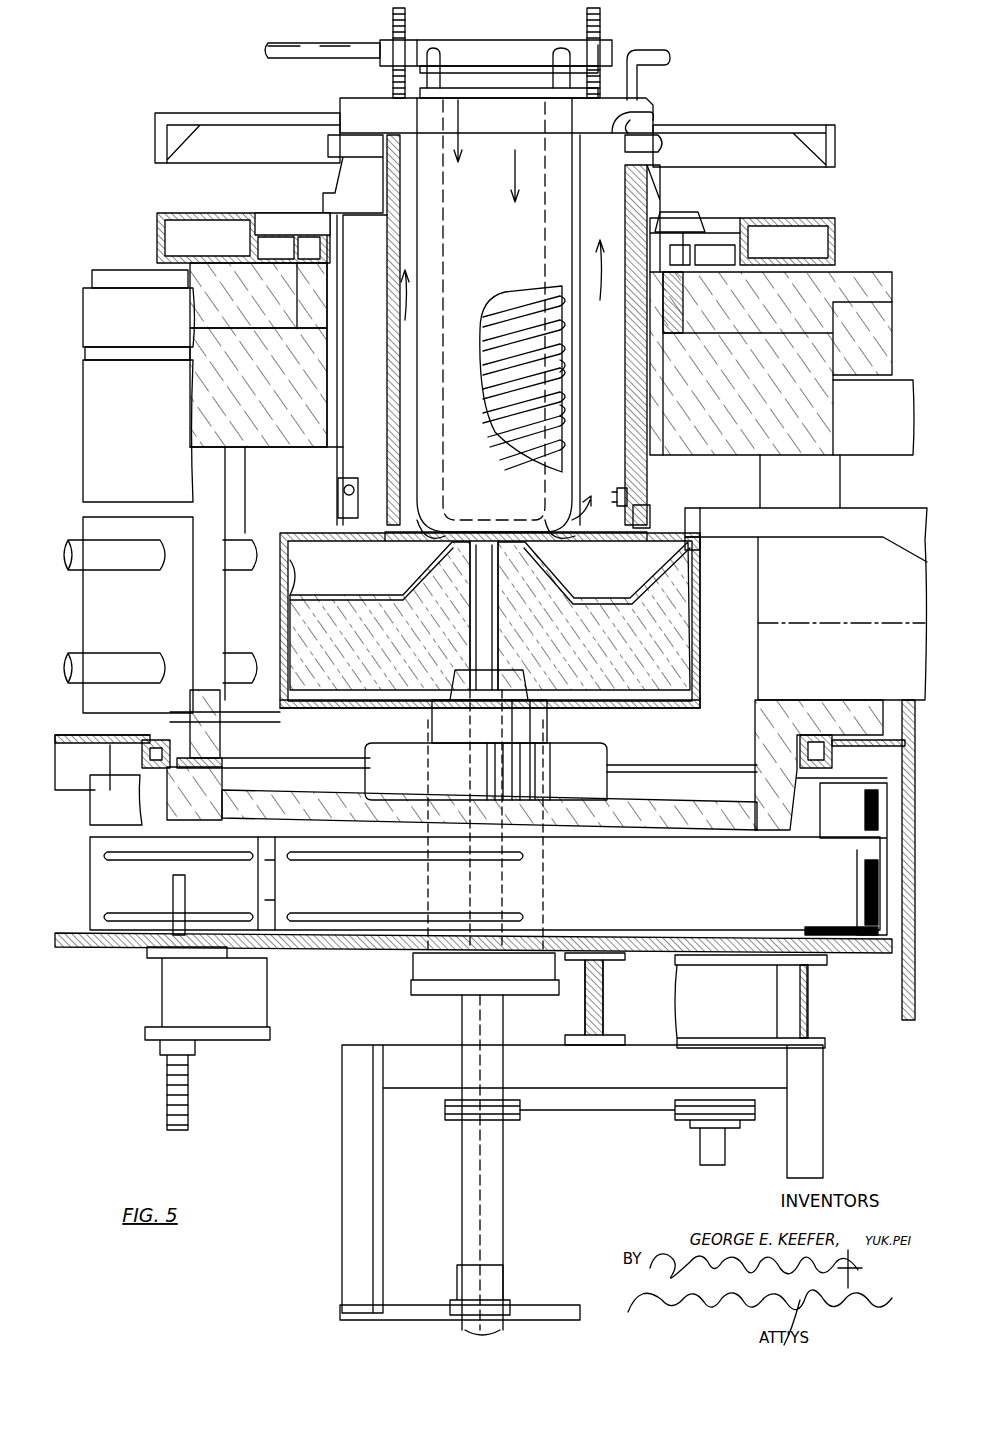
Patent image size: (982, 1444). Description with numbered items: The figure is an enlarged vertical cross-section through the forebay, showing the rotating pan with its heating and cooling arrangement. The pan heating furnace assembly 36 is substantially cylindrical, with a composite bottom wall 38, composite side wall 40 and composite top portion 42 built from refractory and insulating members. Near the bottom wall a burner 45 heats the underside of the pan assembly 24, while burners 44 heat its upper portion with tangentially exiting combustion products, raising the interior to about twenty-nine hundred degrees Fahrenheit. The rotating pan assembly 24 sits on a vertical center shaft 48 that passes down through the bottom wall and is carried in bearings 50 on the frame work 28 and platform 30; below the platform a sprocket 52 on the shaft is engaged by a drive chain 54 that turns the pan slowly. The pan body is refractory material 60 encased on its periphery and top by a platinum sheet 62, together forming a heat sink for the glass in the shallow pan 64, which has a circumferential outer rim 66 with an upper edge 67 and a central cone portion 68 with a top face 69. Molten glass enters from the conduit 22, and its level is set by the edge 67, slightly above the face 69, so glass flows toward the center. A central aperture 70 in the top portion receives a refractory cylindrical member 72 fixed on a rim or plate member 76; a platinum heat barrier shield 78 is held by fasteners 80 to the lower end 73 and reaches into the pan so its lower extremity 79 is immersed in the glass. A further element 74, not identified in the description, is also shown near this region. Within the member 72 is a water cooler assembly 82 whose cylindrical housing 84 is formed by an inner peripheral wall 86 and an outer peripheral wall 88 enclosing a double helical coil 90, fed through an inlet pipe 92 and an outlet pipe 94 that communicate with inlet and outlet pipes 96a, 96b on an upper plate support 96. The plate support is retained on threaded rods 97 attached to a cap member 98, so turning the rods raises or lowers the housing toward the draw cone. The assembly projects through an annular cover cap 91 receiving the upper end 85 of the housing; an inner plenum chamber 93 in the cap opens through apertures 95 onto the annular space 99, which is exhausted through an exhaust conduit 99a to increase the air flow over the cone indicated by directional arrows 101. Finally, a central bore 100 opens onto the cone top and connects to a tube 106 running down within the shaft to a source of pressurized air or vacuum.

The conduit 22 is at (858, 508).
The rotating pan assembly 24 is at (712, 648).
The frame work 28 is at (823, 1132).
The platform 30 is at (803, 1006).
The pan heating furnace assembly 36 is at (105, 255).
The composite bottom wall 38 is at (485, 883).
The composite side wall 40 is at (138, 536).
The composite top portion 42 is at (866, 272).
The burners 44 is at (128, 562).
The burner 45 is at (240, 683).
The vertical center shaft 48 is at (503, 1020).
The bearings 50 is at (443, 995).
The sprocket 52 is at (520, 1115).
The drive chain 54 is at (598, 1110).
The refractory material 60 is at (626, 690).
The platinum sheet 62 is at (700, 586).
The pan 64 is at (345, 590).
The circumferential outer rim 66 is at (700, 557).
The upper edge 67 is at (698, 510).
The central cone portion 68 is at (415, 548).
The top face 69 is at (505, 532).
The central aperture 70 is at (666, 364).
The cylindrical member 72 is at (493, 330).
The lower end 73 is at (587, 501).
The left flange 74 is at (333, 190).
The plate member 76 is at (692, 212).
The heat barrier shield 78 is at (338, 509).
The lower extremity 79 is at (612, 542).
The fasteners 80 is at (630, 490).
The water cooler assembly 82 is at (589, 192).
The cylindrical housing 84 is at (383, 412).
The upper end 85 is at (462, 88).
The inner peripheral wall 86 is at (566, 368).
The outer peripheral wall 88 is at (566, 410).
The double helical coil 90 is at (568, 322).
The cover cap 91 is at (340, 106).
The inlet pipe 92 is at (433, 48).
The inner plenum chamber 93 is at (650, 115).
The outlet pipe 94 is at (560, 48).
The apertures 95 is at (666, 145).
The upper plate support 96 is at (500, 43).
The inlet pipe 96a is at (285, 43).
The outlet pipe 96b is at (323, 43).
The threaded rods 97 is at (393, 22).
The cap member 98 is at (760, 125).
The annular space 99 is at (507, 265).
The exhaust conduit 99a is at (667, 50).
The central bore 100 is at (498, 640).
The directional arrows 101 is at (512, 170).
The tube 106 is at (475, 768).